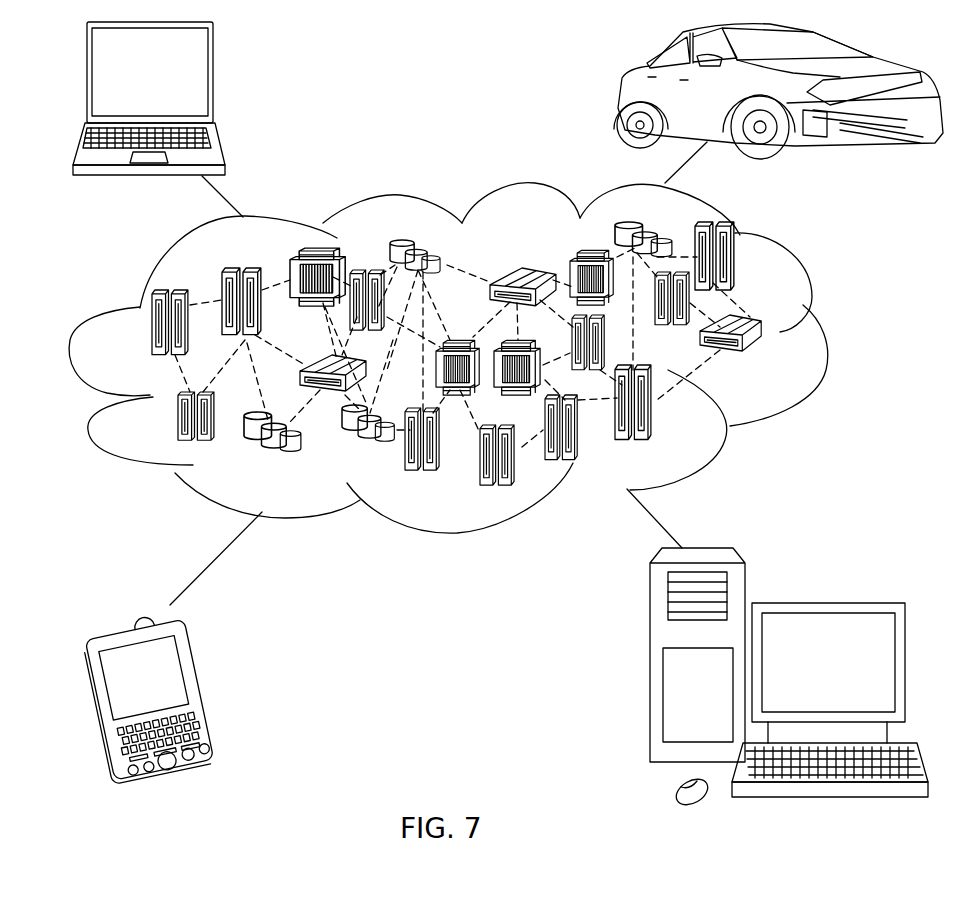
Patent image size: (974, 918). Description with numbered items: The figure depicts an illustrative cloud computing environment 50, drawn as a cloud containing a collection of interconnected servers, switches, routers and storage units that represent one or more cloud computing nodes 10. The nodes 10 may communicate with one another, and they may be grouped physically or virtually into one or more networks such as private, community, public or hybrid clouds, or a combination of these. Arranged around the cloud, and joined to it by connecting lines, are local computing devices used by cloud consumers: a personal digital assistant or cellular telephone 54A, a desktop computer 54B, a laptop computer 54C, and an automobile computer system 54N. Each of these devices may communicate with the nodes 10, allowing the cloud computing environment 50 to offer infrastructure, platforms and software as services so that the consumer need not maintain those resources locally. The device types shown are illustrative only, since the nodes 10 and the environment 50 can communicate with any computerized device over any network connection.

The cloud computing nodes 10 is at (786, 365).
The cloud computing environment 50 is at (827, 334).
The personal digital assistant (PDA) or cellular telephone 54A is at (205, 690).
The desktop computer 54B is at (824, 603).
The laptop computer 54C is at (213, 80).
The automobile computer system 54N is at (620, 92).